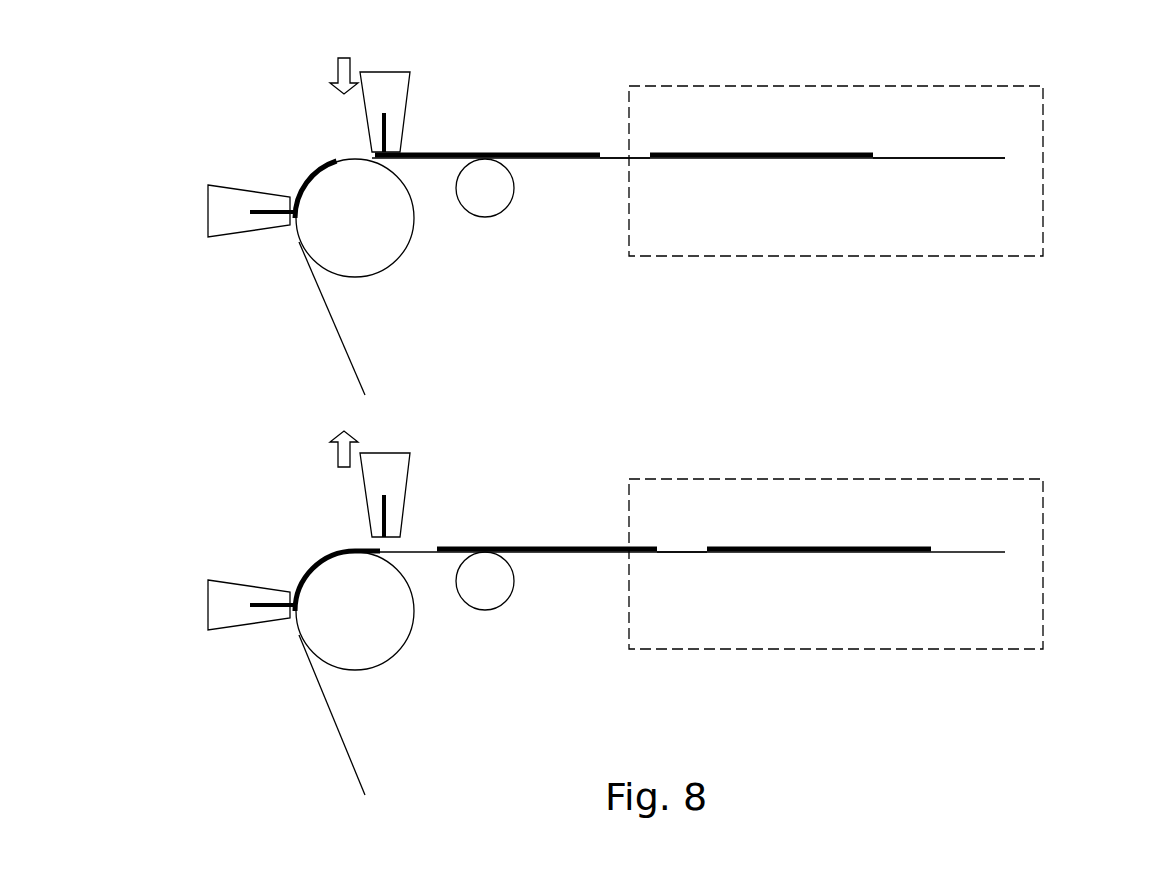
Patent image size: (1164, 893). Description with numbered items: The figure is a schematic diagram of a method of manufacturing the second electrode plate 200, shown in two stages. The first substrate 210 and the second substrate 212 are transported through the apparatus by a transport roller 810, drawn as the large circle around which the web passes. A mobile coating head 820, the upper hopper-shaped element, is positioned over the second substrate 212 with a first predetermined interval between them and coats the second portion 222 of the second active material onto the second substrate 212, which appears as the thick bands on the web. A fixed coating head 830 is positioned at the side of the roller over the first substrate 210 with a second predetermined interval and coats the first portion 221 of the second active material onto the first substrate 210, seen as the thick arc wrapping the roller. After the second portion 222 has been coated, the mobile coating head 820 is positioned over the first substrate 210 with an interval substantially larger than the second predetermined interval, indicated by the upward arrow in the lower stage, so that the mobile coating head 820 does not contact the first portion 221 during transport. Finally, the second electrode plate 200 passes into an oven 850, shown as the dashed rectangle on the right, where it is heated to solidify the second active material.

The second electrode plate 200 is at (940, 148).
The first substrate 210 is at (300, 240).
The second substrate 212 is at (542, 162).
The first portion of the second active material 221 is at (312, 565).
The second portion of the second active material 222 is at (553, 153).
The transport roller 810 is at (372, 243).
The mobile coating head 820 is at (408, 93).
The fixed coating head 830 is at (220, 212).
The oven 850 is at (1020, 213).